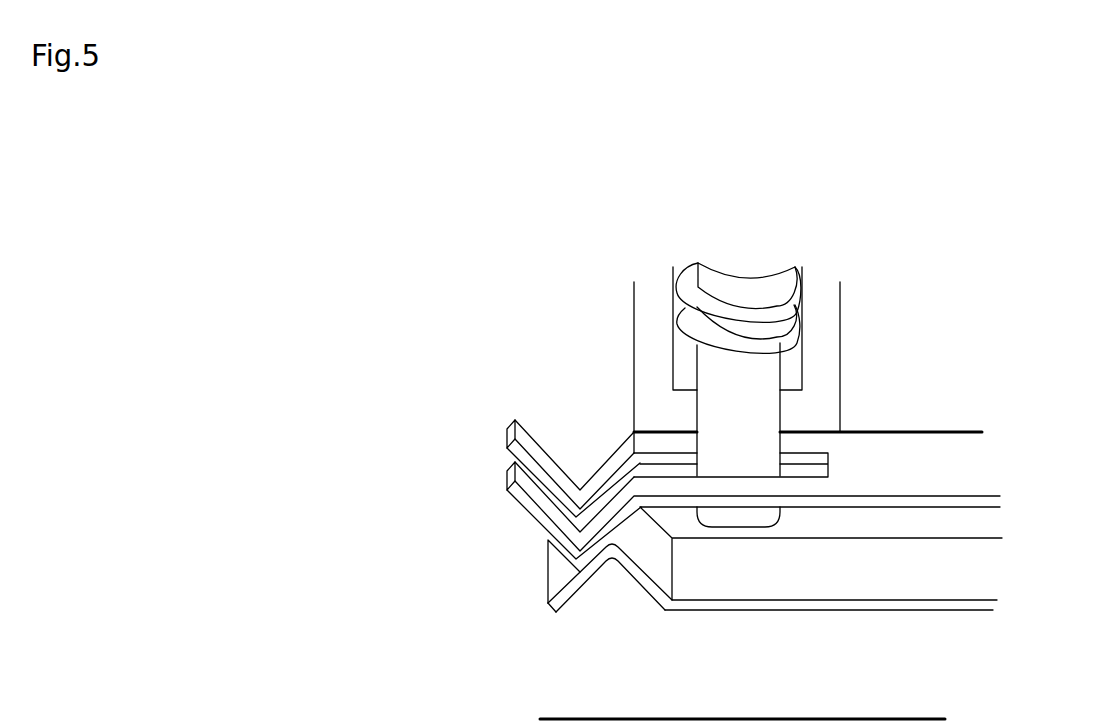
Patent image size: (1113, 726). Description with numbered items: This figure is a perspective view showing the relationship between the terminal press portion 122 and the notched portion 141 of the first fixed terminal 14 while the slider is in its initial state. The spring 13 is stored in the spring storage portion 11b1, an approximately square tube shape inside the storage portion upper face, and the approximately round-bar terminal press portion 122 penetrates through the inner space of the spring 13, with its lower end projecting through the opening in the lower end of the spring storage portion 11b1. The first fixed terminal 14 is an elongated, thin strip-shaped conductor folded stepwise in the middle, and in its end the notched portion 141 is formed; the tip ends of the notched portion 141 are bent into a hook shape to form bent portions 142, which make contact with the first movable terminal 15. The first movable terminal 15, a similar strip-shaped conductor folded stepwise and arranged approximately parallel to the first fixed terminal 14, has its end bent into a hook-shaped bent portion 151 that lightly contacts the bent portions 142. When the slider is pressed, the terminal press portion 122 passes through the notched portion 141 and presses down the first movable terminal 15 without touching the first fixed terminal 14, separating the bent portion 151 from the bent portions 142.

The spring storage portion 11b1 is at (642, 356).
The spring 13 is at (790, 299).
The terminal press portion 122 is at (774, 366).
The first fixed terminal 14 is at (983, 460).
The notched portion 141 is at (508, 458).
The bent portions 142 is at (574, 553).
The bent portion 151 is at (612, 548).
The first movable terminal 15 is at (973, 611).